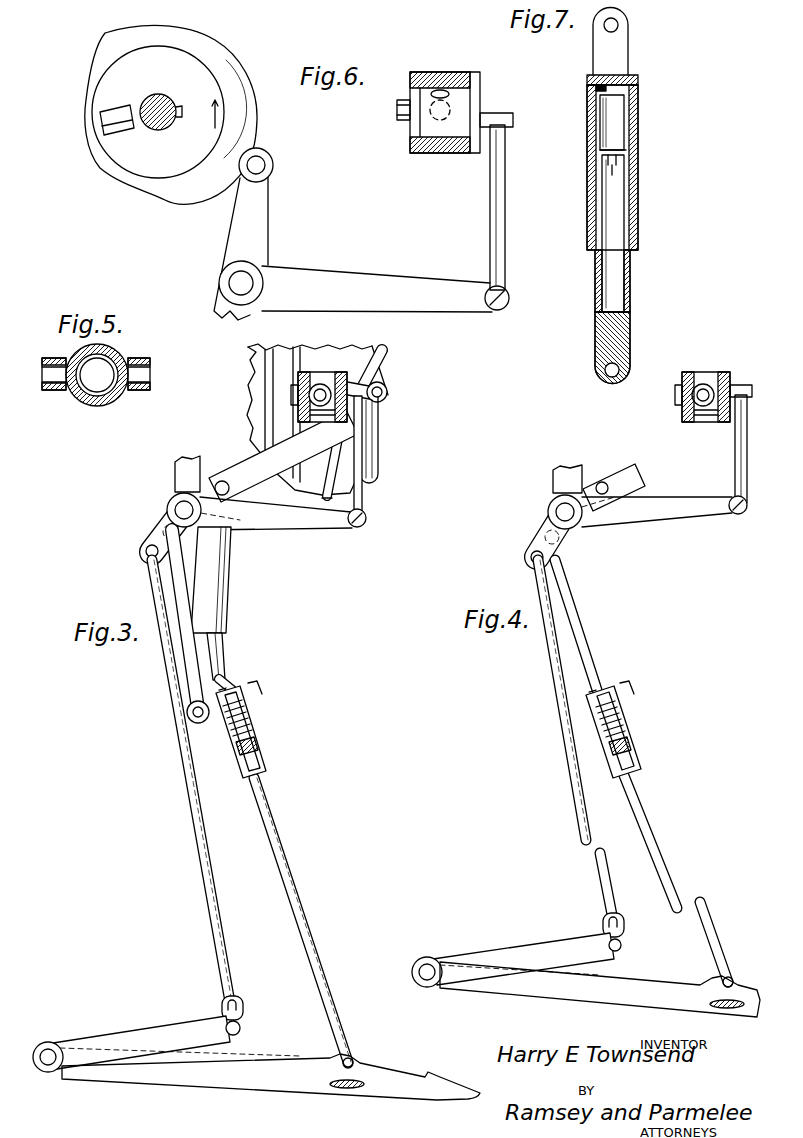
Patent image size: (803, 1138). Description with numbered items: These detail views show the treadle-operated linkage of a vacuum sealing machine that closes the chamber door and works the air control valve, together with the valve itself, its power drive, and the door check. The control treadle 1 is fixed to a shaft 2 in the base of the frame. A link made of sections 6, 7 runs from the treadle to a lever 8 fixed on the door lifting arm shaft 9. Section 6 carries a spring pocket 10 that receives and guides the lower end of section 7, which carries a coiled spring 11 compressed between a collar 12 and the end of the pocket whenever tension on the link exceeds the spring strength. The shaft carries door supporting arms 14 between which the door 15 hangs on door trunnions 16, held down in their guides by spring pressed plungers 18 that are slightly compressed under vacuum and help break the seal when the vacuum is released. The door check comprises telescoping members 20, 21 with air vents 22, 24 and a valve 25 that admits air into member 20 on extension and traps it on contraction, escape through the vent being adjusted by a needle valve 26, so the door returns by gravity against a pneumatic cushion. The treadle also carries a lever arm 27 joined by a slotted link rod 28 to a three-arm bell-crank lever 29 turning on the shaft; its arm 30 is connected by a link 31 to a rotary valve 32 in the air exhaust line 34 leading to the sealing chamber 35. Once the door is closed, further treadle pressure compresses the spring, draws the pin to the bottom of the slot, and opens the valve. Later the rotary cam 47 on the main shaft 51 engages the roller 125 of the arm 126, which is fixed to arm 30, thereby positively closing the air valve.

In FIG. 3, the control treadle 1 is at (386, 1078).
In FIG. 4, the control treadle 1 is at (657, 989).
In FIG. 3, the shaft 2 is at (47, 1048).
In FIG. 4, the shaft 2 is at (427, 964).
In FIG. 3, the link section 6 is at (288, 863).
In FIG. 4, the link section 6 is at (653, 834).
In FIG. 3, the link section 7 is at (224, 681).
In FIG. 4, the link section 7 is at (590, 646).
In FIG. 3, the lever 8 is at (160, 547).
In FIG. 4, the lever 8 is at (573, 541).
In FIG. 6, the door lifting arm shaft 9 is at (220, 283).
In FIG. 3, the door lifting arm shaft 9 is at (167, 509).
In FIG. 4, the door lifting arm shaft 9 is at (548, 512).
In FIG. 3, the spring pocket 10 is at (251, 736).
In FIG. 4, the spring pocket 10 is at (632, 729).
In FIG. 3, the coiled spring 11 is at (246, 718).
In FIG. 4, the coiled spring 11 is at (622, 713).
In FIG. 3, the collar 12 is at (256, 751).
In FIG. 4, the collar 12 is at (631, 741).
In FIG. 3, the door supporting arms 14 is at (235, 471).
In FIG. 4, the door supporting arms 14 is at (615, 469).
In FIG. 3, the door 15 is at (379, 459).
In FIG. 3, the door trunnions 16 is at (387, 394).
In FIG. 3, the spring pressed plungers 18 is at (380, 389).
In FIG. 7, the telescoping member 20 is at (639, 126).
In FIG. 3, the telescoping member 20 is at (231, 594).
In FIG. 7, the telescoping member 21 is at (594, 279).
In FIG. 3, the telescoping member 21 is at (223, 644).
In FIG. 7, the air vent 22 is at (640, 85).
In FIG. 7, the air vent 24 is at (626, 306).
In FIG. 7, the valve 25 is at (598, 139).
In FIG. 7, the needle valve 26 is at (594, 87).
In FIG. 3, the lever arm 27 is at (127, 1039).
In FIG. 4, the lever arm 27 is at (507, 954).
In FIG. 3, the slotted link rod 28 is at (200, 885).
In FIG. 4, the slotted link rod 28 is at (572, 804).
In FIG. 6, the three-arm bell-crank lever 29 is at (262, 272).
In FIG. 6, the arm 30 is at (412, 290).
In FIG. 3, the arm 30 is at (311, 526).
In FIG. 4, the arm 30 is at (677, 526).
In FIG. 6, the link 31 is at (505, 247).
In FIG. 3, the link 31 is at (362, 505).
In FIG. 4, the link 31 is at (745, 460).
In FIG. 6, the rotary valve 32 is at (438, 87).
In FIG. 5, the rotary valve 32 is at (96, 400).
In FIG. 3, the rotary valve 32 is at (322, 372).
In FIG. 4, the rotary valve 32 is at (731, 380).
In FIG. 5, the air exhaust line 34 is at (43, 375).
In FIG. 3, the air exhaust line 34 is at (318, 386).
In FIG. 4, the air exhaust line 34 is at (703, 386).
In FIG. 3, the sealing chamber 35 is at (356, 362).
In FIG. 6, the rotary cam 47 is at (248, 104).
In FIG. 6, the main shaft 51 is at (158, 95).
In FIG. 6, the roller 125 is at (273, 165).
In FIG. 6, the arm 126 is at (268, 211).